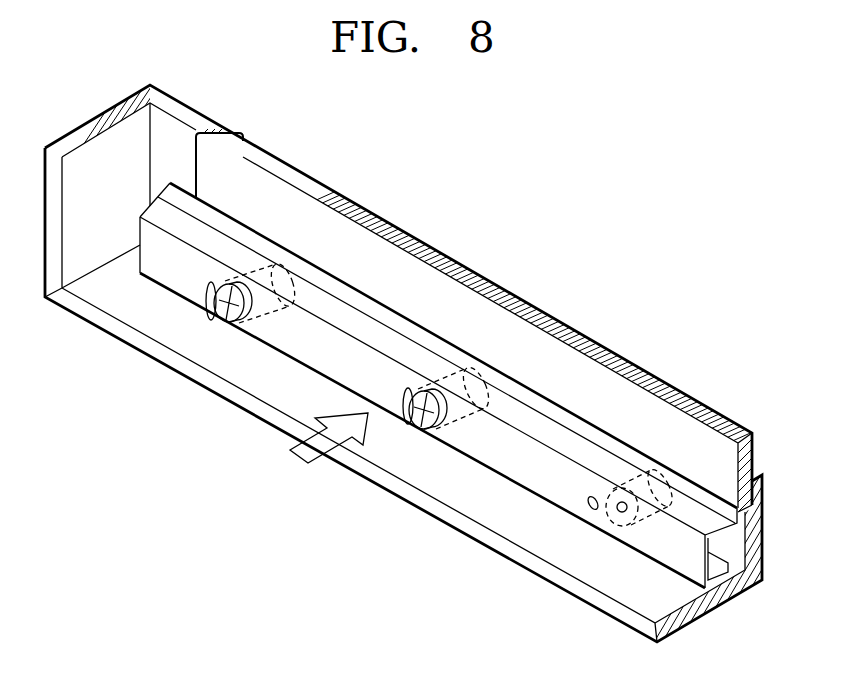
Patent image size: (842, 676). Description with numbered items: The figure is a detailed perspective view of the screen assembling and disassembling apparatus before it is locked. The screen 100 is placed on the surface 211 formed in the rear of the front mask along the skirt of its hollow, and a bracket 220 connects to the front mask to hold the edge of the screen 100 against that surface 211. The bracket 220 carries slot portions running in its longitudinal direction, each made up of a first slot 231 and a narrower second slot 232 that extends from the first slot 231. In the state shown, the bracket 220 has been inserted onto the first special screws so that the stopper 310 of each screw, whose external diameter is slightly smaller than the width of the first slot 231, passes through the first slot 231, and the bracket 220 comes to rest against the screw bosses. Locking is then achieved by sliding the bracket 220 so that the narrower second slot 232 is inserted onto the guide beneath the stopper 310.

The screen 100 is at (322, 190).
The surface 211 is at (212, 133).
The bracket 220 is at (166, 293).
The first slot 231 is at (238, 322).
The second slot 232 is at (211, 296).
The stopper 310 is at (222, 312).